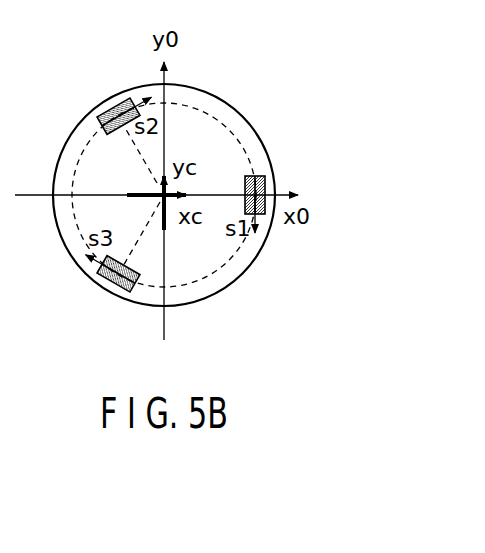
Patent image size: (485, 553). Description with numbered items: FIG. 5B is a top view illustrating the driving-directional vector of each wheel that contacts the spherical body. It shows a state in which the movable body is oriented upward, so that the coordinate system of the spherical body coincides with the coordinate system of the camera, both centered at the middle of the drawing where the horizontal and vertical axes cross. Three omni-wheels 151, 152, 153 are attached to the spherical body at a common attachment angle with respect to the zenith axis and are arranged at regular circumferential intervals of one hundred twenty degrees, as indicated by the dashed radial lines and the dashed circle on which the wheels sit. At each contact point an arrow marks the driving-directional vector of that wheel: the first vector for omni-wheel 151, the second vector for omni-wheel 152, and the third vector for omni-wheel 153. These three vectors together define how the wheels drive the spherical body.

The omni-wheel 151 is at (265, 183).
The omni-wheel 152 is at (108, 111).
The omni-wheel 153 is at (111, 283).